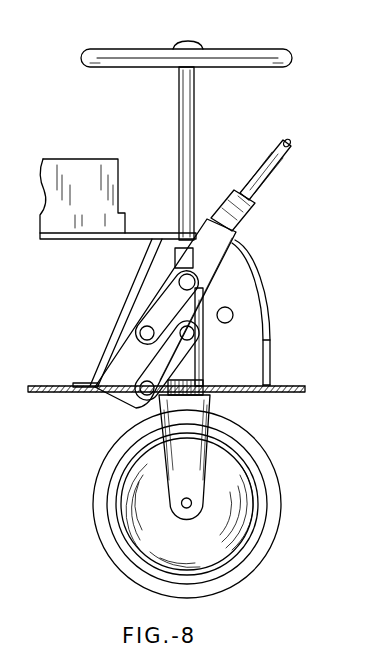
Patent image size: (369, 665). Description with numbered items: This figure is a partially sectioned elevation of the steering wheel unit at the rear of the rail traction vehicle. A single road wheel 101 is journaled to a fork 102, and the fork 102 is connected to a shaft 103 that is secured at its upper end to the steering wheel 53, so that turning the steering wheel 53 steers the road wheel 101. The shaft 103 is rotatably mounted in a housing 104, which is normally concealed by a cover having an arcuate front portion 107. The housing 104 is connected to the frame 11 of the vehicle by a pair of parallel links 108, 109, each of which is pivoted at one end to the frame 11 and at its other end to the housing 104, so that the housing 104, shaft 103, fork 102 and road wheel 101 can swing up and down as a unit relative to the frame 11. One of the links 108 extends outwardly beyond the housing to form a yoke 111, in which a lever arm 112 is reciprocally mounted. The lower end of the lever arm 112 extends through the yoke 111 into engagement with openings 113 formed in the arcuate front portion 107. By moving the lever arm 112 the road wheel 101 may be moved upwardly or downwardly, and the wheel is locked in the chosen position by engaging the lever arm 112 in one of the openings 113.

The steering wheel 53 is at (289, 23).
The shaft 103 is at (192, 143).
The frame 11 is at (82, 383).
The lever arm 112 is at (276, 170).
The yoke 111 is at (237, 237).
The arcuate front portion 107 is at (258, 292).
The openings 113 is at (271, 340).
The housing 104 is at (204, 366).
The link 108 is at (180, 313).
The link 109 is at (175, 373).
The fork 102 is at (193, 427).
The road wheel 101 is at (253, 482).